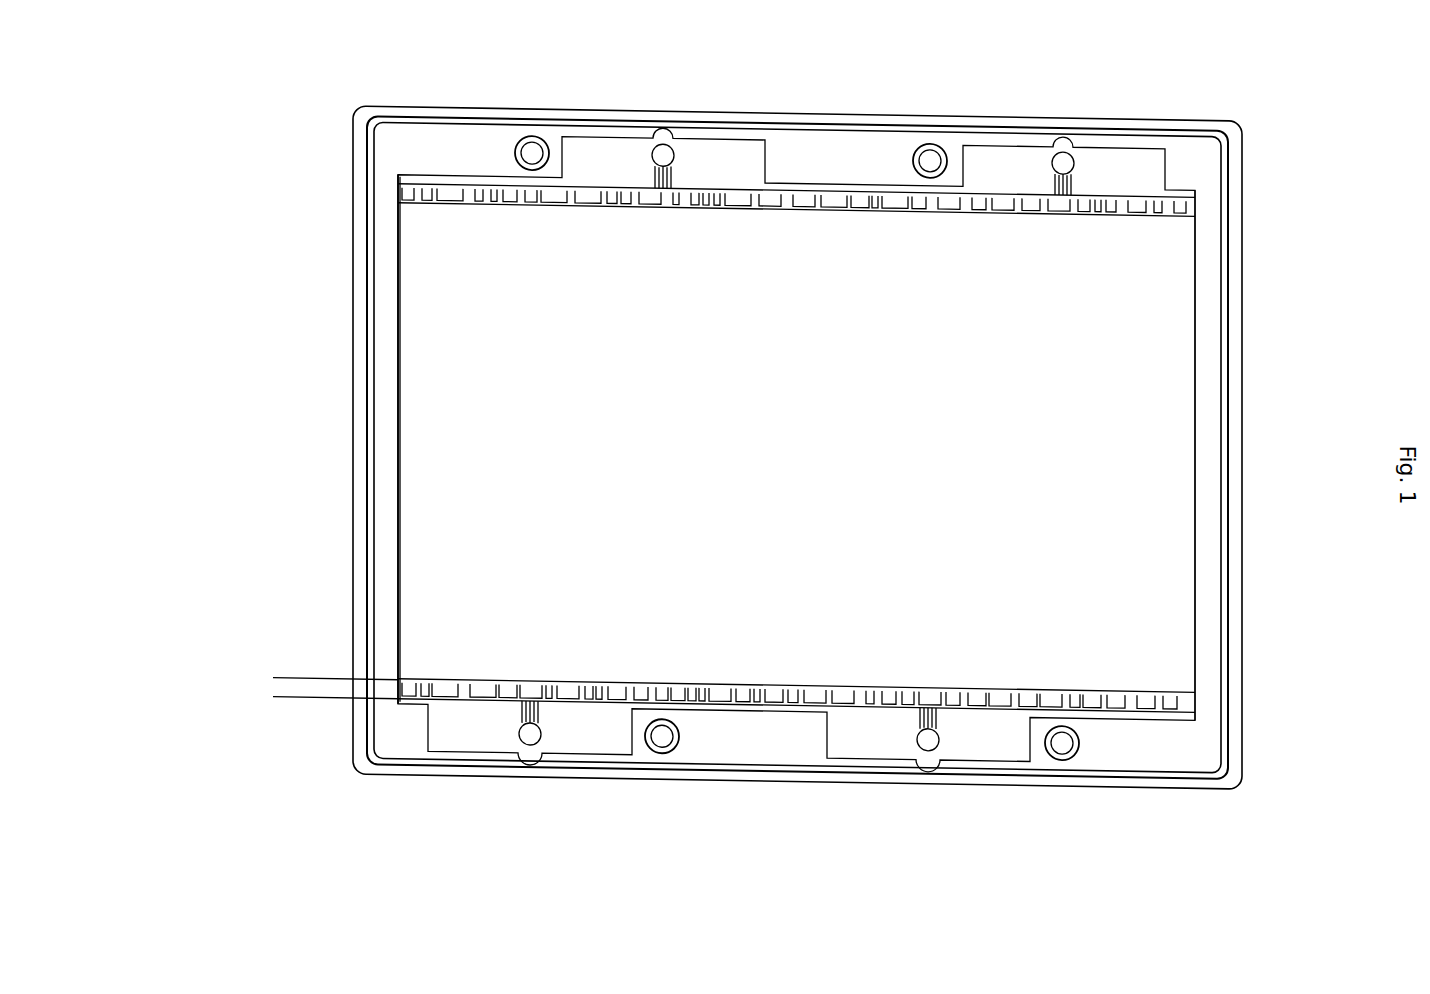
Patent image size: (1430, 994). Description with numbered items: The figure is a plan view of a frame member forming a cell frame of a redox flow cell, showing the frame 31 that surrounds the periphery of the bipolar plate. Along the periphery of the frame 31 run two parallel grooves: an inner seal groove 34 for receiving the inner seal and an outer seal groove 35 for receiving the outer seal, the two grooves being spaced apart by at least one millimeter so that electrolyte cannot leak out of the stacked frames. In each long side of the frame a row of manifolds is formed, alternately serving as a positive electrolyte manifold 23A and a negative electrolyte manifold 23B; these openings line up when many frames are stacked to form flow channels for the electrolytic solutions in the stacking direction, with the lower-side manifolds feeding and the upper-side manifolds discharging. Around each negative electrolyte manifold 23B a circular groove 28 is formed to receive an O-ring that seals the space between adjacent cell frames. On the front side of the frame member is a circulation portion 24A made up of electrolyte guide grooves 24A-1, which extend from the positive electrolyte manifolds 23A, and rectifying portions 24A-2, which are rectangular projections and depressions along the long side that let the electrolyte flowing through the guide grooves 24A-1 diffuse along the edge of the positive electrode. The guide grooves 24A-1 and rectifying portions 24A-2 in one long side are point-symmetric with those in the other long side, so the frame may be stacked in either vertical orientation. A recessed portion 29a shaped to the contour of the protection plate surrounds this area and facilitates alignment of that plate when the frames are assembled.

The frame 31 is at (1242, 279).
The outer seal groove 35 is at (1230, 468).
The inner seal groove 34 is at (1223, 608).
The recessed portion 29a is at (865, 759).
The circular groove 28 is at (1056, 760).
The positive electrolyte manifold 23A is at (1065, 148).
The negative electrolyte manifold 23B is at (939, 141).
The circulation portion 24A is at (152, 667).
The electrolyte guide groove 24A-1 is at (522, 708).
The rectifying portion 24A-2 is at (278, 650).